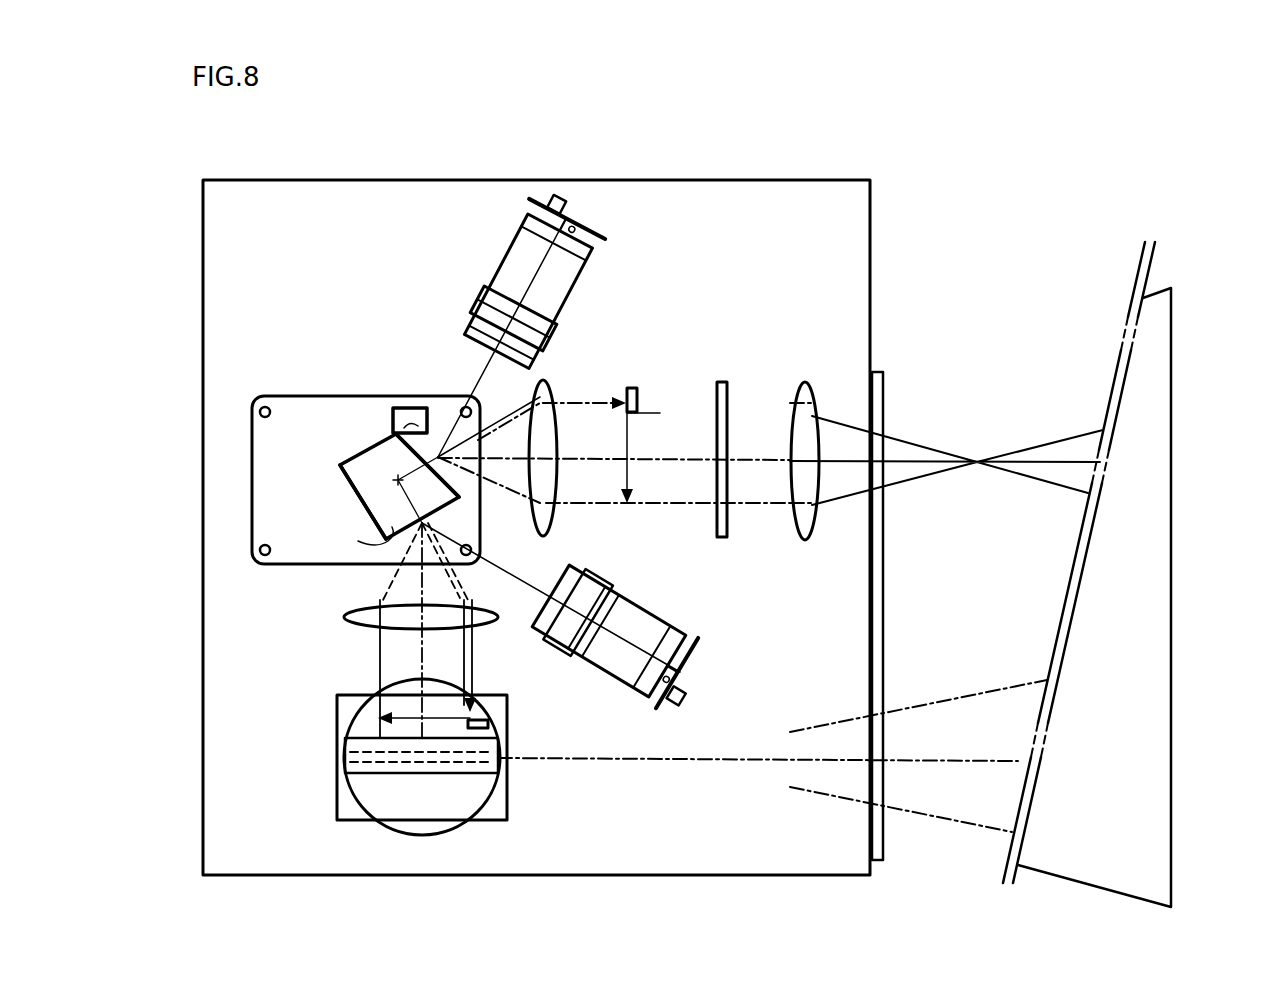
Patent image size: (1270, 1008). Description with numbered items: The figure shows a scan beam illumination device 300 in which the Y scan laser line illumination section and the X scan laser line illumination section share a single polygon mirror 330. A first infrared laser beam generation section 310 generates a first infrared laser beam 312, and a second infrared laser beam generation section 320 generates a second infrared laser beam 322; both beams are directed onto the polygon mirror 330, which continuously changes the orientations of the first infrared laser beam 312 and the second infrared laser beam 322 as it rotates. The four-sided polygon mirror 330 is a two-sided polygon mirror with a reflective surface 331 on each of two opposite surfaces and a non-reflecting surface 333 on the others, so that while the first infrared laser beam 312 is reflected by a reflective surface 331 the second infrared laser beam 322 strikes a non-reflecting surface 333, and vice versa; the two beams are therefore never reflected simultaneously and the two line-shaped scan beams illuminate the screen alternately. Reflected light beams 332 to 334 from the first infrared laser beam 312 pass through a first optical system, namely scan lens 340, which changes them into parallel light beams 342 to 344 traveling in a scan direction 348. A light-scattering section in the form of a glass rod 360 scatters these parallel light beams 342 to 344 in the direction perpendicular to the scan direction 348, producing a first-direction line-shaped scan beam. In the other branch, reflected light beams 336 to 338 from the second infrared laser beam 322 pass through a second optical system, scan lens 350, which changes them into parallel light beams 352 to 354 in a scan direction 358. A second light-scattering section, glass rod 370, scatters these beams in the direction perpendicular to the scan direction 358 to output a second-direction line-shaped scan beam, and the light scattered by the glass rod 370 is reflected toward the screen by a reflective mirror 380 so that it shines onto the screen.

The scan beam illumination device 300 is at (924, 137).
The first infrared laser beam generation section 310 is at (597, 236).
The first infrared laser beam 312 is at (489, 365).
The second infrared laser beam generation section 320 is at (688, 664).
The second infrared laser beam 322 is at (501, 566).
The polygon mirror 330 is at (340, 465).
The reflective surface 331 is at (438, 456).
The non-reflecting surface 333 is at (378, 438).
The reflected light beam 332 is at (522, 498).
The reflected light beam 334 is at (497, 418).
The reflected light beam 336 is at (454, 594).
The reflected light beam 338 is at (384, 594).
The first optical system (scan lens) 340 is at (553, 534).
The parallel light beam 342 is at (645, 504).
The parallel light beam 344 is at (668, 399).
The scan direction 348 is at (628, 447).
The second optical system (scan lens) 350 is at (492, 618).
The parallel light beam 352 is at (490, 722).
The parallel light beam 354 is at (378, 667).
The scan direction 358 is at (418, 718).
The light-scattering section (glass rod) 360 is at (723, 538).
The light-scattering section (glass rod) 370 is at (508, 800).
The reflective mirror 380 is at (337, 807).